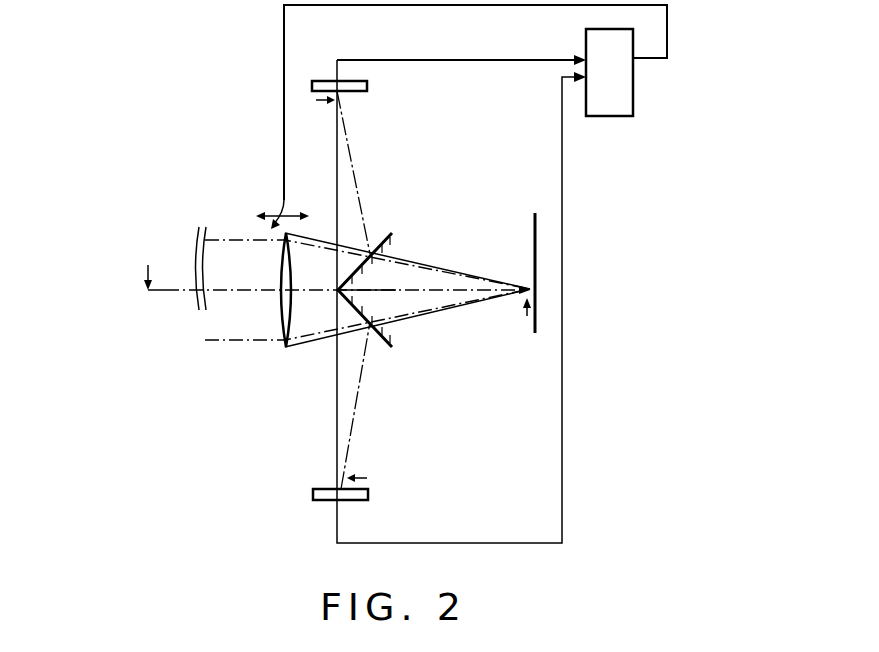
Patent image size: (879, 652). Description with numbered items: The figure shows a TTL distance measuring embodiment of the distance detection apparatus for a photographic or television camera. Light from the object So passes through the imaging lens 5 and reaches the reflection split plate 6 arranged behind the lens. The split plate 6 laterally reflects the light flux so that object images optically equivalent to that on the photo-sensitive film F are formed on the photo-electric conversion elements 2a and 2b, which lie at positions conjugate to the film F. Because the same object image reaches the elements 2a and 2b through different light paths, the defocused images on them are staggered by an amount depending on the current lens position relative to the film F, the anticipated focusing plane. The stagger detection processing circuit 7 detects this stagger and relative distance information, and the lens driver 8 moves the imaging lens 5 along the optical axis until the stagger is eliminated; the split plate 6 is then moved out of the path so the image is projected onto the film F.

The photo-electric conversion element 2a is at (367, 86).
The photo-electric conversion element 2b is at (312, 494).
The imaging lens 5 is at (282, 337).
The reflection split plate 6 is at (383, 238).
The stagger detection or relative distance information detection processing circuit 7 is at (636, 80).
The lens driver 8 is at (282, 205).
The photo-sensitive film F is at (532, 229).
The light source So is at (145, 270).